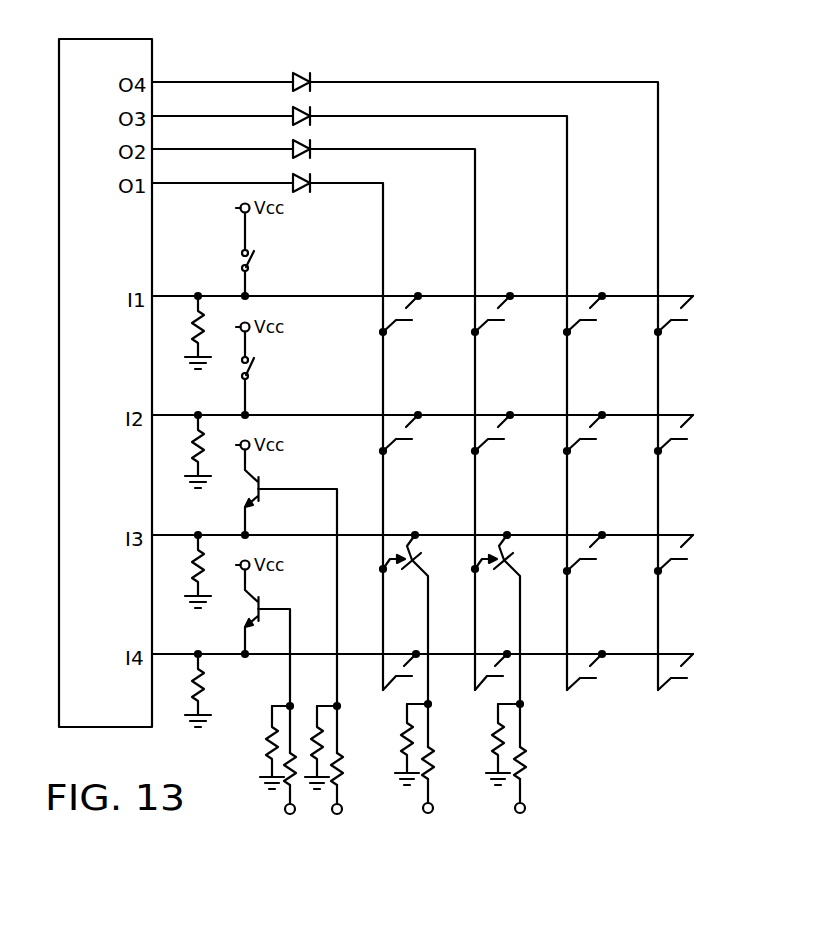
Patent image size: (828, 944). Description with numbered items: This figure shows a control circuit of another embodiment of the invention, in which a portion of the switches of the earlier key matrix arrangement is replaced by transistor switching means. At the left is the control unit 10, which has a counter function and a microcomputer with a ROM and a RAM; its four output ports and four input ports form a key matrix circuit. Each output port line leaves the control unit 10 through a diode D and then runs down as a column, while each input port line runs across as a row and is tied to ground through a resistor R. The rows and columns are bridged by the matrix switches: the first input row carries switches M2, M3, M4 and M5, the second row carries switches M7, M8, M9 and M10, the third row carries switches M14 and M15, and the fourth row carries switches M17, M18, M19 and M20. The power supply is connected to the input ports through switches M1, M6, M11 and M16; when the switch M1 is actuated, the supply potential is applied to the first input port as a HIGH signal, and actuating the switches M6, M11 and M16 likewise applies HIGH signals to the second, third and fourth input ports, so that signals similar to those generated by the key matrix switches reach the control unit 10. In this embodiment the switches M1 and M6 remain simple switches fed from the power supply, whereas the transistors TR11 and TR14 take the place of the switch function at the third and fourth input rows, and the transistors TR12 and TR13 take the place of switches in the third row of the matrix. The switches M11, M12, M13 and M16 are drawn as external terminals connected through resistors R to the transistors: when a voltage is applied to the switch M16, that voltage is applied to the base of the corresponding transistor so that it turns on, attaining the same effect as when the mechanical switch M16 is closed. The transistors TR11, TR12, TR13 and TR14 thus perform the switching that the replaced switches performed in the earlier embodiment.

The control unit 10 is at (89, 39).
The diode D is at (293, 75).
The resistor R is at (192, 326).
The switch M1 is at (256, 258).
The switch M2 is at (402, 321).
The switch M3 is at (494, 321).
The switch M4 is at (586, 321).
The switch M5 is at (677, 321).
The switch M6 is at (256, 366).
The switch M7 is at (402, 440).
The switch M8 is at (494, 440).
The switch M9 is at (586, 440).
The switch M10 is at (677, 440).
The switch M11 is at (334, 773).
The switch M12 is at (428, 772).
The switch M13 is at (520, 772).
The switch M14 is at (586, 560).
The switch M15 is at (677, 560).
The switch M16 is at (287, 773).
The switch M17 is at (401, 674).
The switch M18 is at (492, 674).
The switch M19 is at (586, 679).
The switch M20 is at (677, 679).
The transistor TR11 is at (253, 478).
The transistor TR12 is at (417, 555).
The transistor TR13 is at (509, 555).
The transistor TR14 is at (253, 598).